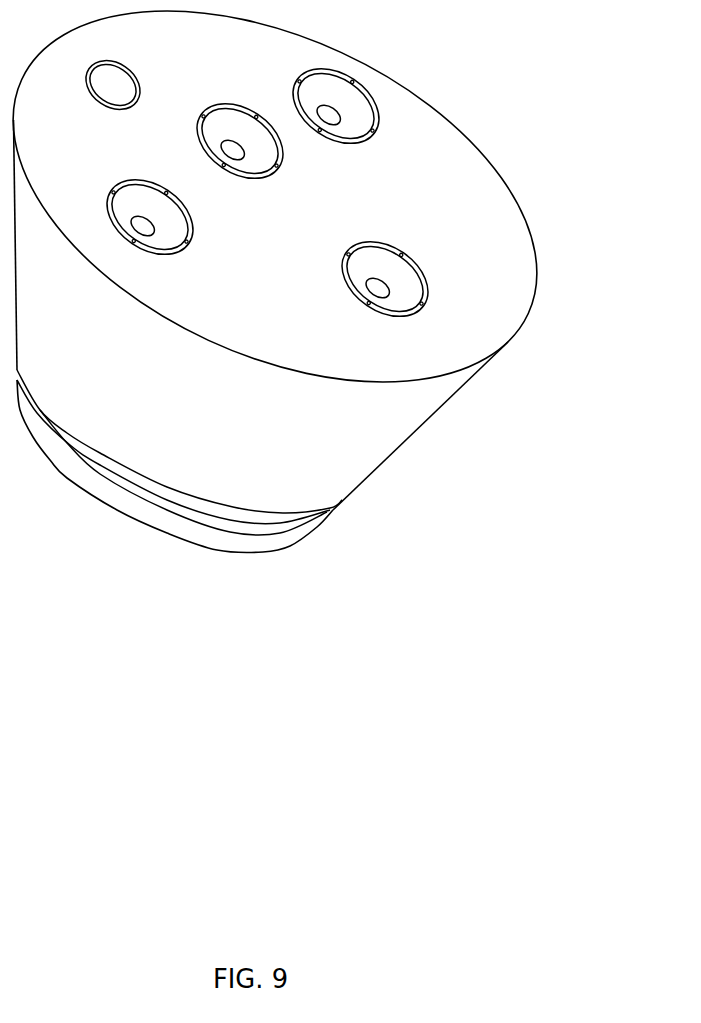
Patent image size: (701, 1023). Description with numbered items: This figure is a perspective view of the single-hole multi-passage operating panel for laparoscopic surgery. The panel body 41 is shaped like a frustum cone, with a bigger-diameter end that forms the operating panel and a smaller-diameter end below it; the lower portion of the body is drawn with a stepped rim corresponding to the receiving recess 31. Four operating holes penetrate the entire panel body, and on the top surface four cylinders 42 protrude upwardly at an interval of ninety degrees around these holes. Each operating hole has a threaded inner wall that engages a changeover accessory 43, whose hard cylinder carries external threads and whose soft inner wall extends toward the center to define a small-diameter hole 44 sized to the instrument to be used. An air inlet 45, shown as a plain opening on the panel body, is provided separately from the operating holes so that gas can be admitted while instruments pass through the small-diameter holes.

The receiving recess 31 is at (327, 510).
The panel body 41 is at (465, 217).
The cylinder 42 is at (375, 128).
The changeover accessory 43 is at (371, 105).
The small-diameter hole 44 is at (333, 115).
The air inlet 45 is at (115, 83).